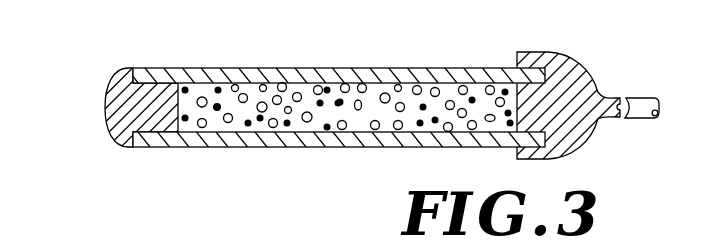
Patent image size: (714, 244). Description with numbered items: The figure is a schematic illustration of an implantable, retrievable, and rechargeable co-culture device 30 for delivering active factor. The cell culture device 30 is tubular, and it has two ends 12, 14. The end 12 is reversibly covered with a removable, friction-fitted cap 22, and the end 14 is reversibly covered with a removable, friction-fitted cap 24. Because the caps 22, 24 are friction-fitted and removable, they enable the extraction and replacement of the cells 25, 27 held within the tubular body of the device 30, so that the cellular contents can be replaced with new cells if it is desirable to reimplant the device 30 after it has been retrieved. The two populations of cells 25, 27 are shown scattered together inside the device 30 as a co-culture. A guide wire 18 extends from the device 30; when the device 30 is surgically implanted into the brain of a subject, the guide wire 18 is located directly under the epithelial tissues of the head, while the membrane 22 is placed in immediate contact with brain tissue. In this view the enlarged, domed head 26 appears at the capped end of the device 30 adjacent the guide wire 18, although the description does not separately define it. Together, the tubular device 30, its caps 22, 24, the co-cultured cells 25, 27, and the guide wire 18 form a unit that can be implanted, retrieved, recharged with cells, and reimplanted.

The end 12 is at (139, 160).
The end 14 is at (512, 45).
The guide wire 18 is at (647, 97).
The cap 22 is at (308, 66).
The cap 24 is at (113, 128).
The cells 25 is at (392, 129).
The domed head of cap 26 is at (579, 66).
The cells 27 is at (260, 122).
The cell culture device 30 is at (221, 49).